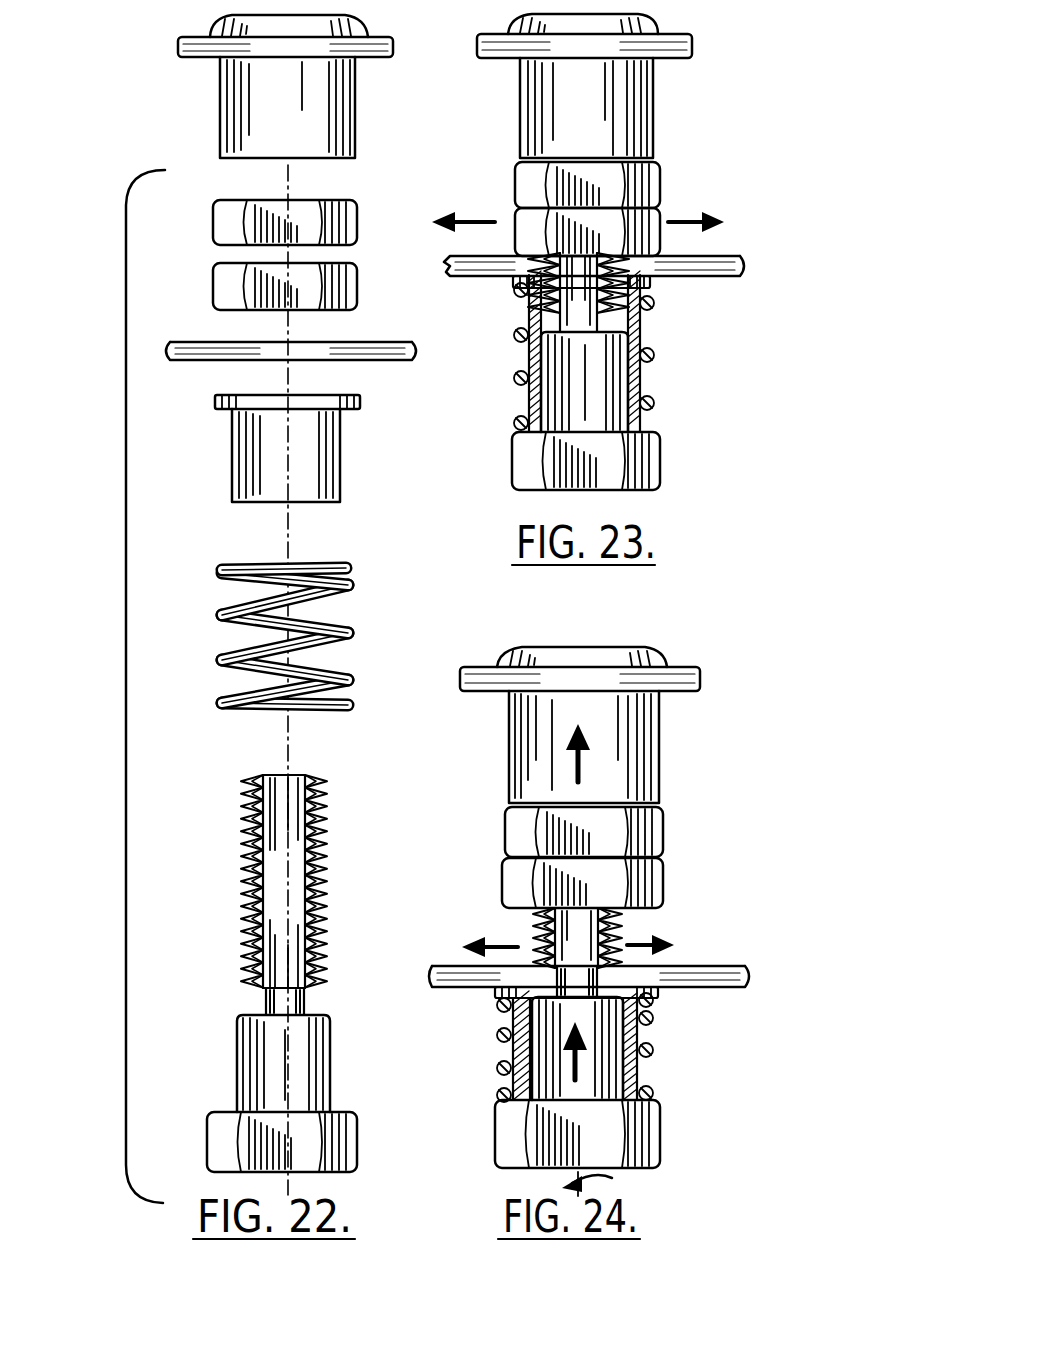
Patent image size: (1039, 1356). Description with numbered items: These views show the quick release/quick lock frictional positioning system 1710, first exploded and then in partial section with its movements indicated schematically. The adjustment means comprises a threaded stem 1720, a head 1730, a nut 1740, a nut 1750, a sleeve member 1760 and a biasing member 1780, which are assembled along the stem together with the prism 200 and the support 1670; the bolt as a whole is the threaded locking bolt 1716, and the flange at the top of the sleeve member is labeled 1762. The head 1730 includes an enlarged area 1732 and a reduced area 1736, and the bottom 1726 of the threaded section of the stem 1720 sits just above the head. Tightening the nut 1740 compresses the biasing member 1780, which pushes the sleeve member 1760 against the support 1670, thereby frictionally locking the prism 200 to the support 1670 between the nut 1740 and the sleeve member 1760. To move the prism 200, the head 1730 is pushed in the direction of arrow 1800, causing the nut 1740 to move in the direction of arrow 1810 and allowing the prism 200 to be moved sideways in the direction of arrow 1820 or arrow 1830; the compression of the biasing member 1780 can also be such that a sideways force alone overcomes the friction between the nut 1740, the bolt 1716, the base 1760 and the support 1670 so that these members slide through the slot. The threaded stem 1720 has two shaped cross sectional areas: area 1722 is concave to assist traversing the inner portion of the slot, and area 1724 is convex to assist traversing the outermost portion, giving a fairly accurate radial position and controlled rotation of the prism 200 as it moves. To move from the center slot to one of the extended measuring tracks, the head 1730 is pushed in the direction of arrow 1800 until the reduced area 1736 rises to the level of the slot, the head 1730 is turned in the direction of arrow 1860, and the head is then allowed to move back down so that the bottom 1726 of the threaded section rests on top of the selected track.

In FIG. 22, the quick release/quick lock frictional positioning system 1710 is at (126, 582).
In FIG. 22, the prism 200 is at (350, 95).
In FIG. 23, the prism 200 is at (655, 88).
In FIG. 24, the prism 200 is at (660, 722).
In FIG. 22, the nut 1750 is at (215, 222).
In FIG. 23, the nut 1750 is at (660, 172).
In FIG. 24, the nut 1750 is at (665, 818).
In FIG. 22, the nut 1740 is at (215, 280).
In FIG. 23, the nut 1740 is at (665, 235).
In FIG. 24, the nut 1740 is at (665, 880).
In FIG. 22, the support 1670 is at (395, 360).
In FIG. 23, the support 1670 is at (745, 266).
In FIG. 24, the support 1670 is at (758, 976).
In FIG. 22, the bushing flange 1762 is at (225, 392).
In FIG. 23, the bushing flange 1762 is at (515, 282).
In FIG. 24, the bushing flange 1762 is at (655, 993).
In FIG. 22, the sleeve member 1760 is at (316, 462).
In FIG. 23, the sleeve member 1760 is at (530, 318).
In FIG. 24, the sleeve member 1760 is at (514, 1040).
In FIG. 22, the biasing member 1780 is at (222, 568).
In FIG. 23, the biasing member 1780 is at (658, 347).
In FIG. 24, the biasing member 1780 is at (660, 1040).
In FIG. 22, the cross sectional area 1722 is at (283, 775).
In FIG. 23, the cross sectional area 1722 is at (540, 290).
In FIG. 24, the cross sectional area 1722 is at (540, 918).
In FIG. 22, the cross sectional area 1724 is at (300, 778).
In FIG. 22, the threaded stem 1720 is at (278, 915).
In FIG. 23, the threaded stem 1720 is at (593, 292).
In FIG. 22, the threaded locking bolt 1716 is at (210, 898).
In FIG. 22, the reduced area 1736 is at (265, 995).
In FIG. 24, the reduced area 1736 is at (632, 982).
In FIG. 22, the bottom of threaded section 1726 is at (328, 990).
In FIG. 22, the enlarged area 1732 is at (238, 1058).
In FIG. 23, the enlarged area 1732 is at (630, 376).
In FIG. 24, the enlarged area 1732 is at (535, 1088).
In FIG. 22, the head 1730 is at (350, 1145).
In FIG. 23, the head 1730 is at (660, 450).
In FIG. 24, the head 1730 is at (655, 1158).
In FIG. 23, the arrow 1830 is at (470, 218).
In FIG. 24, the arrow 1830 is at (516, 947).
In FIG. 23, the arrow 1820 is at (693, 220).
In FIG. 24, the arrow 1820 is at (660, 945).
In FIG. 24, the arrow 1810 is at (582, 768).
In FIG. 24, the arrow 1800 is at (585, 1075).
In FIG. 24, the arrow 1860 is at (608, 1180).